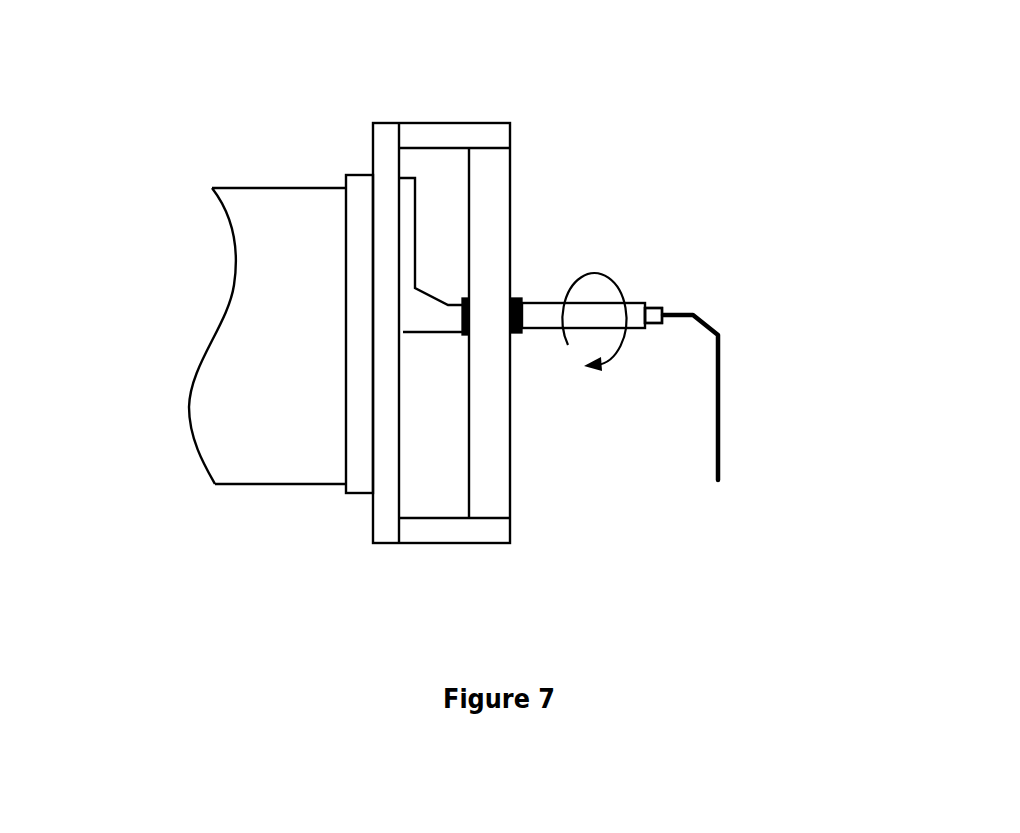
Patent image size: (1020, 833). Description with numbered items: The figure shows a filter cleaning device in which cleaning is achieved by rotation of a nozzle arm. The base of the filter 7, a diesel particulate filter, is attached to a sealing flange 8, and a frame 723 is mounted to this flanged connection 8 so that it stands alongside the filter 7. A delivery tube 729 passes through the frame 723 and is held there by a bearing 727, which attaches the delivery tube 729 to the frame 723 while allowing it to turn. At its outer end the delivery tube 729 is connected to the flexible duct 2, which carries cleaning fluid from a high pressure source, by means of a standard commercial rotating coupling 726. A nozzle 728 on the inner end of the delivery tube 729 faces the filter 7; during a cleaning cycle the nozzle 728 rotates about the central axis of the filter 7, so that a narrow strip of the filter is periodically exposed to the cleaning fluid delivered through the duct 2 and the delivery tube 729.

The filter 7 is at (227, 267).
The sealing flange 8 is at (338, 168).
The frame 723 is at (427, 118).
The nozzle 728 is at (430, 225).
The delivery tube 729 is at (542, 348).
The bearing 727 is at (523, 287).
The rotating coupling 726 is at (665, 302).
The flexible duct 2 is at (730, 423).